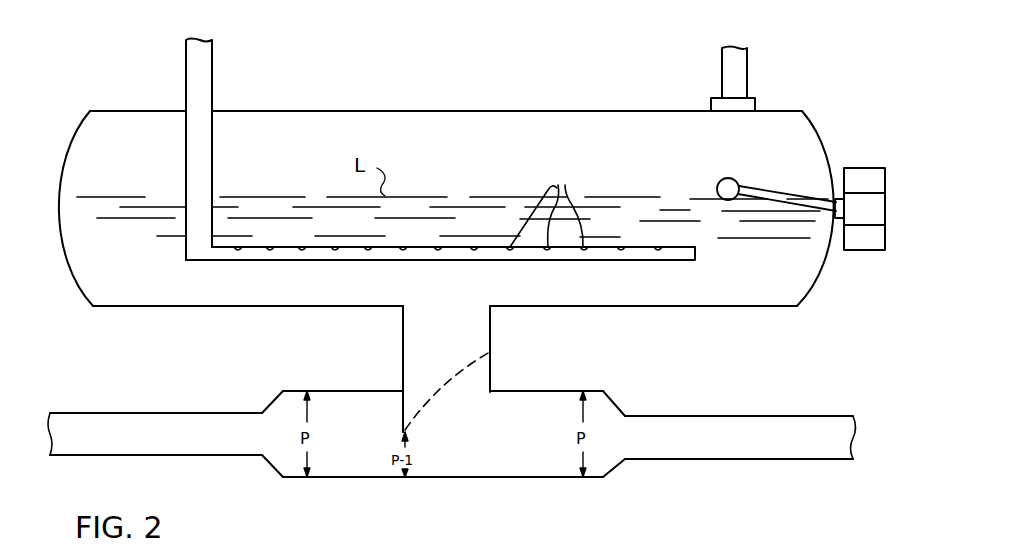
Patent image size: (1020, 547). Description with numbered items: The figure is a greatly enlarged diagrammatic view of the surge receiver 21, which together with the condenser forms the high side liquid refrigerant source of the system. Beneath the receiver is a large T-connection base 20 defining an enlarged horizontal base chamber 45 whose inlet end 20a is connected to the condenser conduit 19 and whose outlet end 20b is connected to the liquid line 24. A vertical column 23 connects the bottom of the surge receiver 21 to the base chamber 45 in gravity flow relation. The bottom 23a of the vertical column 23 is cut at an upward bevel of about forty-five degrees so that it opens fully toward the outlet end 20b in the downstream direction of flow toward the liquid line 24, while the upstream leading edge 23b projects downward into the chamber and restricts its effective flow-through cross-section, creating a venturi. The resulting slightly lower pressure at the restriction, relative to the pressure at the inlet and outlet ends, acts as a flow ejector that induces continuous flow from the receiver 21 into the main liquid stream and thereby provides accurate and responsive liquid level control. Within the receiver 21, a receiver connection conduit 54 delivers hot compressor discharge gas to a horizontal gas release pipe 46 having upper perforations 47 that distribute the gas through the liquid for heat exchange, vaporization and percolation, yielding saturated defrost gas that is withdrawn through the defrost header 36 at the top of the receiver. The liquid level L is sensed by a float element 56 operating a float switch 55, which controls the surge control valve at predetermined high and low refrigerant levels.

The condenser conduit 19 is at (107, 413).
The T-connection base 20 is at (385, 482).
The inlet end 20a is at (268, 400).
The outlet end 20b is at (622, 412).
The surge receiver 21 is at (456, 101).
The vertical column 23 is at (413, 343).
The bottom of vertical column 23a is at (497, 377).
The leading edge of vertical column 23b is at (403, 413).
The liquid line 24 is at (818, 416).
The defrost header 36 is at (749, 62).
The base chamber 45 is at (508, 465).
The gas release pipe 46 is at (346, 258).
The upper perforations 47 is at (553, 196).
The receiver connection conduit 54 is at (213, 72).
The float switch 55 is at (899, 157).
The float element 56 is at (744, 152).